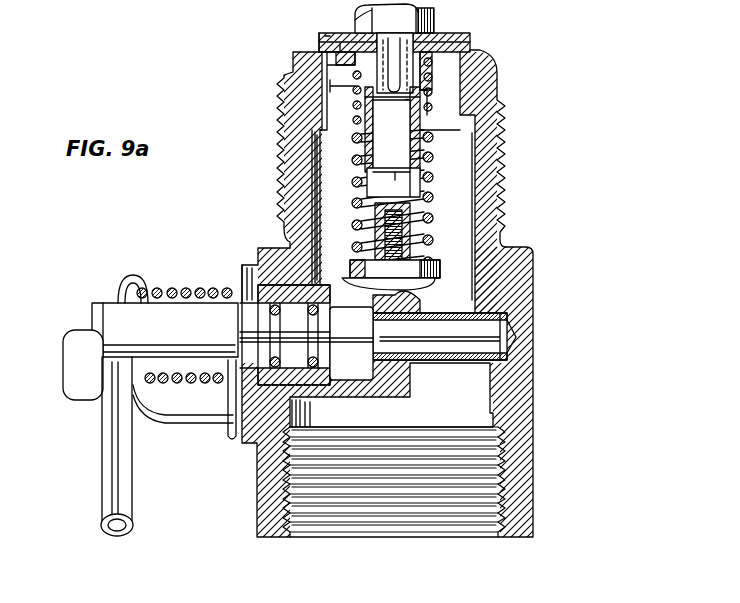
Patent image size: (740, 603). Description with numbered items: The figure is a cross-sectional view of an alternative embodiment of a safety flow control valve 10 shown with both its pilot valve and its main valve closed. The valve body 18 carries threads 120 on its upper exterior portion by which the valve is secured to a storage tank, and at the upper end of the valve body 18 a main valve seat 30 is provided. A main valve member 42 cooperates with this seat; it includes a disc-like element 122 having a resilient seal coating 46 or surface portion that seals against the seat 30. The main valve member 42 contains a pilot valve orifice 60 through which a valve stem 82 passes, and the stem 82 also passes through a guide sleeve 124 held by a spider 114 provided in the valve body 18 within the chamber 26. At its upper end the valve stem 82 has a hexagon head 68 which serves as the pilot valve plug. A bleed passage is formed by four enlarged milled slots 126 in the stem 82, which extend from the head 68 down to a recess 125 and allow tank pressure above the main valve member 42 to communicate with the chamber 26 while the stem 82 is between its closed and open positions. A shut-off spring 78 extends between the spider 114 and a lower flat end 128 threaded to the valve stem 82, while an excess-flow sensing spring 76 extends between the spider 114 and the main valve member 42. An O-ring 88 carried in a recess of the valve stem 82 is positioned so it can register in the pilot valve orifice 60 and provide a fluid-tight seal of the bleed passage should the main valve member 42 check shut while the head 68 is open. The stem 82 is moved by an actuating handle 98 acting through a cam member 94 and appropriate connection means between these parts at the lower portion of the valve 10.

The safety flow control valve 10 is at (562, 133).
The valve body 18 is at (522, 247).
The chamber 26 is at (412, 201).
The main valve seat 30 is at (482, 60).
The main valve member 42 is at (465, 33).
The resilient seal coating 46 is at (315, 45).
The pilot valve orifice 60 is at (359, 33).
The hexagon head 68 is at (434, 20).
The excess-flow sensing spring 76 is at (430, 82).
The shut-off spring 78 is at (352, 225).
The valve stem 82 is at (390, 150).
The O-ring 88 is at (372, 103).
The cam member 94 is at (397, 292).
The actuating handle 98 is at (100, 486).
The spider 114 is at (452, 133).
The threads 120 is at (502, 188).
The disc-like element 122 is at (322, 42).
The guide sleeve 124 is at (402, 178).
The recess 125 is at (411, 101).
The milled slots 126 is at (340, 86).
The lower flat end 128 is at (438, 270).